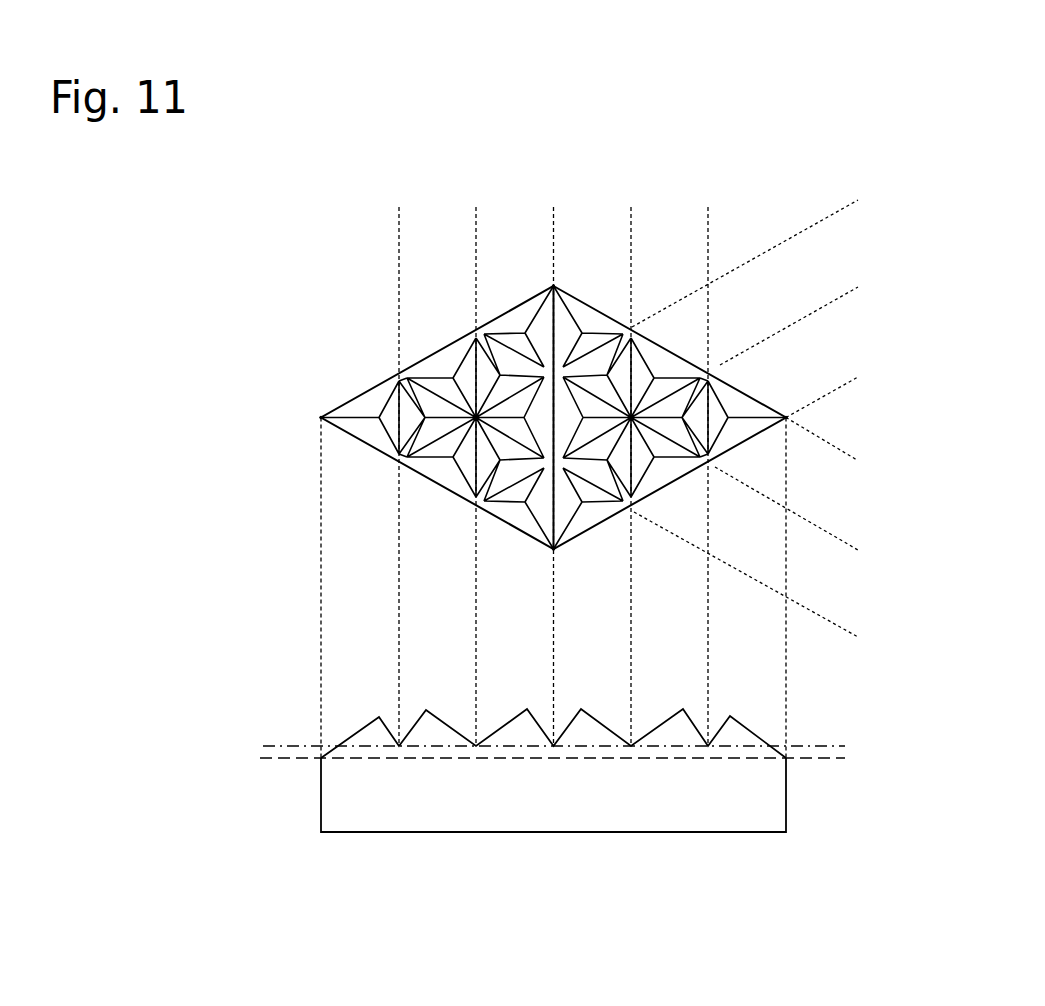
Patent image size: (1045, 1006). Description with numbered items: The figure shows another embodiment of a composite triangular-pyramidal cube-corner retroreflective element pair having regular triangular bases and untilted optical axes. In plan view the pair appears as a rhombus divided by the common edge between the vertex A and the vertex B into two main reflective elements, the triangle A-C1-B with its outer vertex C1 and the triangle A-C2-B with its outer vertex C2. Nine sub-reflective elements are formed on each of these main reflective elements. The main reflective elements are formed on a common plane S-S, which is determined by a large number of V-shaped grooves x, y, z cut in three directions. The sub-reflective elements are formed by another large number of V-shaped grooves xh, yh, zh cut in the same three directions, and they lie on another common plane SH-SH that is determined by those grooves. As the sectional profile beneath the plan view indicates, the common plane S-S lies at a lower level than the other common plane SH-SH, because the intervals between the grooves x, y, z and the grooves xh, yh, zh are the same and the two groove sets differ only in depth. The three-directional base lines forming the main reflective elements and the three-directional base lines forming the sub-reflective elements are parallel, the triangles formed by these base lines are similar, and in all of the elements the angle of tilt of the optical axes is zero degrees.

The apex vertex of main reflective elements A is at (566, 276).
The base vertex of main reflective elements B is at (565, 561).
The vertex of main reflective element A-C1-B C1 is at (801, 589).
The vertex of main reflective element A-C2-B C2 is at (309, 590).
The V-shaped groove x is at (554, 464).
The V-shaped groove for sub-reflective elements xh is at (555, 464).
The V-shaped groove y is at (833, 390).
The V-shaped groove for sub-reflective elements yh is at (764, 274).
The V-shaped groove z is at (832, 450).
The V-shaped groove for sub-reflective elements zh is at (765, 565).
The common plane S- S is at (551, 762).
The common plane SH- SH is at (554, 739).